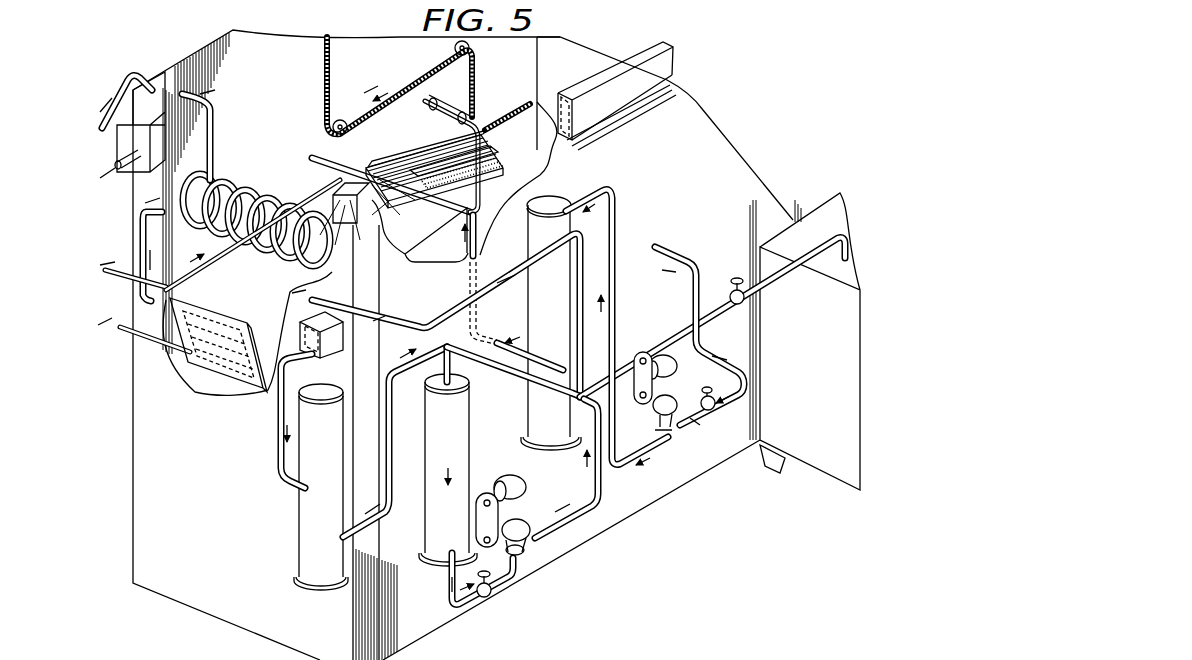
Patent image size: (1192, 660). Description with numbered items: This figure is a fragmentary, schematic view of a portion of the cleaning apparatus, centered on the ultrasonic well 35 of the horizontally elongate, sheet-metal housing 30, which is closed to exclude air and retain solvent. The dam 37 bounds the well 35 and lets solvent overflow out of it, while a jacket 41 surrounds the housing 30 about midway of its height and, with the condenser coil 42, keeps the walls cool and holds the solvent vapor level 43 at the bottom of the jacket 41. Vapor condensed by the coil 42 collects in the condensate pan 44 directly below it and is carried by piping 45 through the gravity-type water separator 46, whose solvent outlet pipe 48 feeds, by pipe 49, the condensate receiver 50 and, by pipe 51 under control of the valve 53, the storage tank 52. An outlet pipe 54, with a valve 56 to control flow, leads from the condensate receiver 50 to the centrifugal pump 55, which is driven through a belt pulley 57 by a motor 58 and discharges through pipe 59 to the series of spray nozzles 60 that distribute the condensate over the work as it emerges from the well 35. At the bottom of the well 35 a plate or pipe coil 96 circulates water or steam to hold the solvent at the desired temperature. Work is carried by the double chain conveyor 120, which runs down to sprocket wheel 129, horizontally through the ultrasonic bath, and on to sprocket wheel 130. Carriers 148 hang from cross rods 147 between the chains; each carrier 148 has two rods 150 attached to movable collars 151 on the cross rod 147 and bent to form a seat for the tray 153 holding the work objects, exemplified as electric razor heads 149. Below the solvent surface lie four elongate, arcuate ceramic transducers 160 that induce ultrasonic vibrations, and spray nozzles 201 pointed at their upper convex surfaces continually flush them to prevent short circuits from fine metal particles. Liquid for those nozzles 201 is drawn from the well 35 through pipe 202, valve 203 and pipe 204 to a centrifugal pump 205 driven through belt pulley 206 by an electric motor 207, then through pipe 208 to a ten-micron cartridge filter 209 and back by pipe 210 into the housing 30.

The housing 30 is at (703, 86).
The well 35 is at (420, 231).
The dam 37 is at (590, 55).
The jacket 41 is at (618, 108).
The condenser coil 42 is at (255, 195).
The vapor level 43 is at (518, 146).
The condensate pan 44 is at (345, 342).
The piping 45 is at (276, 422).
The water separator 46 is at (303, 520).
The solvent outlet pipe 48 is at (385, 495).
The pipe 49 is at (430, 384).
The condensate receiver 50 is at (440, 471).
The pipe 51 is at (524, 378).
The storage tank 52 is at (810, 341).
The valve 53 is at (736, 280).
The outlet pipe 54 is at (445, 573).
The centrifugal pump 55 is at (522, 550).
The valve 56 is at (486, 597).
The belt pulley 57 is at (505, 506).
The motor 58 is at (512, 475).
The pipe 59 is at (594, 482).
The spray nozzles 60 is at (318, 165).
The plate or pipe coil 96 is at (238, 318).
The conveyor 120 is at (330, 52).
The sprocket wheel 129 is at (452, 50).
The sprocket wheel 130 is at (342, 118).
The cross rod 147 is at (484, 126).
The carrier 148 is at (480, 190).
The electric razor heads 149 is at (440, 190).
The rods 150 is at (490, 161).
The movable collars 151 is at (438, 103).
The tray 153 is at (492, 172).
The transducers 160 is at (450, 150).
The spray nozzles 201 is at (410, 152).
The pipe 202 is at (680, 254).
The valve 203 is at (706, 390).
The pipe 204 is at (698, 418).
The centrifugal pump 205 is at (645, 458).
The belt pulley 206 is at (702, 404).
The electric motor 207 is at (672, 365).
The pipe 208 is at (614, 303).
The filter 209 is at (548, 311).
The pipe 210 is at (418, 325).